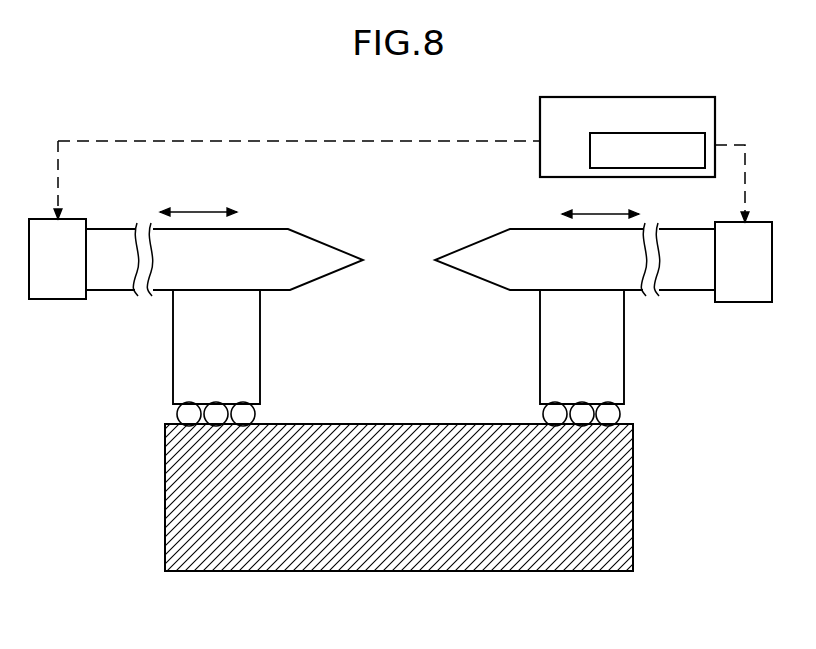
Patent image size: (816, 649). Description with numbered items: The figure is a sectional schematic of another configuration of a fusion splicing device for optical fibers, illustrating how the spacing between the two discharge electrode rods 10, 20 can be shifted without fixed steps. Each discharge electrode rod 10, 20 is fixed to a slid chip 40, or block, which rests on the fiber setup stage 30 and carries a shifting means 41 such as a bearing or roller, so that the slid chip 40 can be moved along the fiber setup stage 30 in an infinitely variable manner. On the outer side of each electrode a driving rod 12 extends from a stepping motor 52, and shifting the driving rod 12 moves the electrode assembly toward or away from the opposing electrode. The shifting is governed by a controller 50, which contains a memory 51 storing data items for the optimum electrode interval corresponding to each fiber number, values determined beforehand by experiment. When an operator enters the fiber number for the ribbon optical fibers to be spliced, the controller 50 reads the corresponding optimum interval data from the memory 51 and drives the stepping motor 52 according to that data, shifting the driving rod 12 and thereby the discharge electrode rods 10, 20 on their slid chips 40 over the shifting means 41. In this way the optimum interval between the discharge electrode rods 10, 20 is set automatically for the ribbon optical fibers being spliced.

The discharge electrode rod 10 is at (263, 228).
The discharge electrode rod 20 is at (513, 229).
The driving rod 12 is at (117, 292).
The fiber setup stage 30 is at (398, 571).
The slid chip 40 is at (173, 366).
The shifting means 41 is at (256, 417).
The controller 50 is at (540, 109).
The memory 51 is at (700, 133).
The stepping motor 52 is at (60, 299).